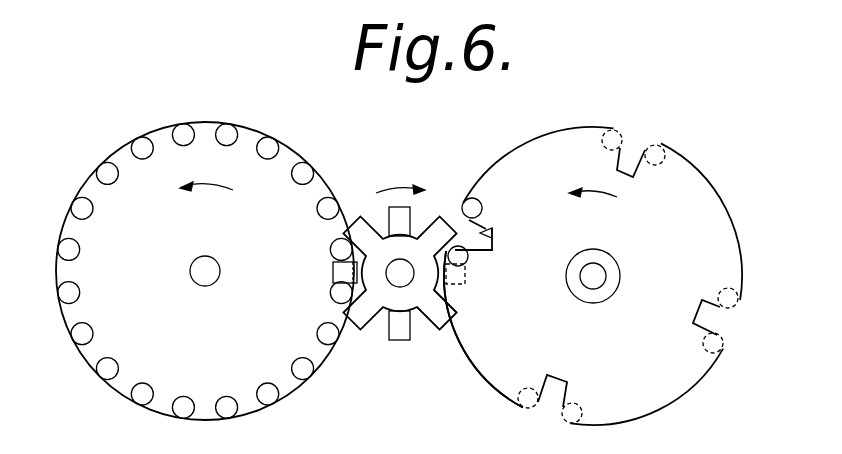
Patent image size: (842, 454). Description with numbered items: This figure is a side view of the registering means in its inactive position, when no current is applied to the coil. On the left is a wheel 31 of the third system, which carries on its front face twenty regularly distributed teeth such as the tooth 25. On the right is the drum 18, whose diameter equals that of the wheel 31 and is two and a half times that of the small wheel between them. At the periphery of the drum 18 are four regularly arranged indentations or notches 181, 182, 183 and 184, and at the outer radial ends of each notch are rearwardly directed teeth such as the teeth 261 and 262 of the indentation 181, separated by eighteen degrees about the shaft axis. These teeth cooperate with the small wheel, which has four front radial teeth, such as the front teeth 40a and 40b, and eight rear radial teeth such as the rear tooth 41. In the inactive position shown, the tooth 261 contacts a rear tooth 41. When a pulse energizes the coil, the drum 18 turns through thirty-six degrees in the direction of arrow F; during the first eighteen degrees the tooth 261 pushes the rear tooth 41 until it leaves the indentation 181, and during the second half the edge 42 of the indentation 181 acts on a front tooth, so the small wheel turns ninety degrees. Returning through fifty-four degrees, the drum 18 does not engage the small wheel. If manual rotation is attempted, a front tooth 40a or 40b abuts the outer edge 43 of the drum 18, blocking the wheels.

The drum 18 is at (671, 191).
The indentation 181 is at (495, 239).
The indentation 182 is at (632, 167).
The indentation 183 is at (701, 313).
The indentation 184 is at (558, 382).
The tooth 25 is at (305, 168).
The wheel 31 is at (308, 200).
The front tooth 40a is at (434, 222).
The front tooth 40b is at (438, 313).
The rear tooth 41 is at (460, 284).
The edge 42 is at (492, 229).
The outer edge 43 is at (482, 380).
The tooth 261 is at (462, 260).
The tooth 262 is at (480, 208).